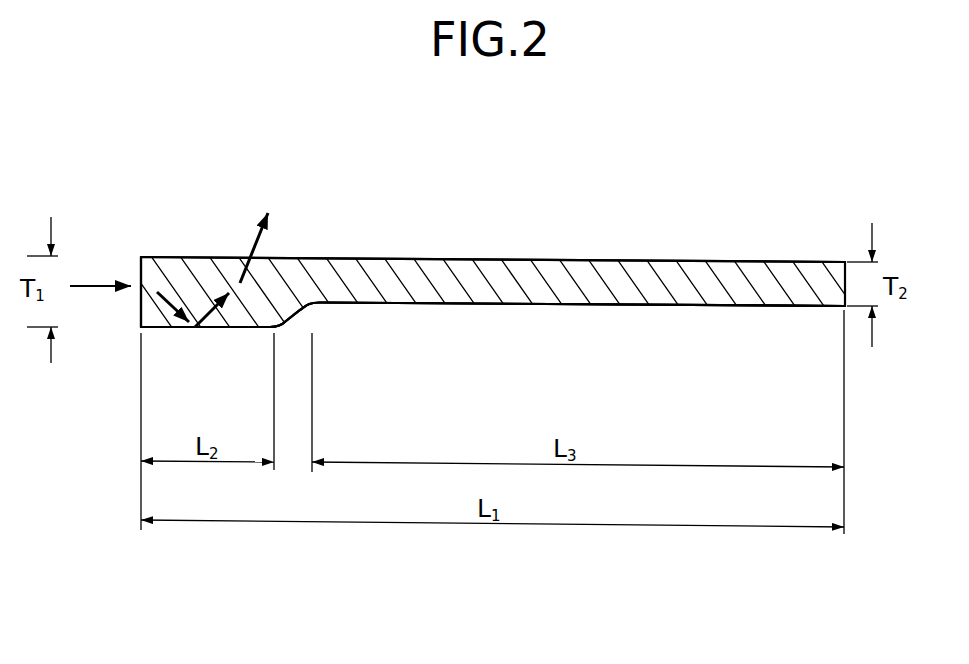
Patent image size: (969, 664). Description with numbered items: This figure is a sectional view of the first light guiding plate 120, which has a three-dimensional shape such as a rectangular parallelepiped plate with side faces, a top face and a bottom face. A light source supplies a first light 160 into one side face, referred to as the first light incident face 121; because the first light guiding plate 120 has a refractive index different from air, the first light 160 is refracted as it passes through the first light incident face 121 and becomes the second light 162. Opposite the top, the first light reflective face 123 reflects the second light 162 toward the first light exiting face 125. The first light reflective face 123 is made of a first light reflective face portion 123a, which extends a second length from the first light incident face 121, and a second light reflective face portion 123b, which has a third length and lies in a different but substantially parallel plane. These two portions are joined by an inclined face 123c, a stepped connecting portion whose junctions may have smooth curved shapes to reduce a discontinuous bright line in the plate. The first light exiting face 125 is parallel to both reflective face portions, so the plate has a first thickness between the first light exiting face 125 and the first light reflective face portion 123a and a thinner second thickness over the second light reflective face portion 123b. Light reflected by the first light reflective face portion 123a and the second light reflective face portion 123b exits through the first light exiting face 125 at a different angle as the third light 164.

The first light guiding plate 120 is at (700, 247).
The first light incident face 121 is at (141, 268).
The first light 160 is at (90, 286).
The third light 164 is at (252, 247).
The second light 162 is at (173, 318).
The first light reflective face portion 123a is at (227, 332).
The second light reflective face portion 123b is at (552, 307).
The inclined face 123c is at (300, 320).
The first light reflective face 123 is at (700, 318).
The first light exiting face 125 is at (552, 258).